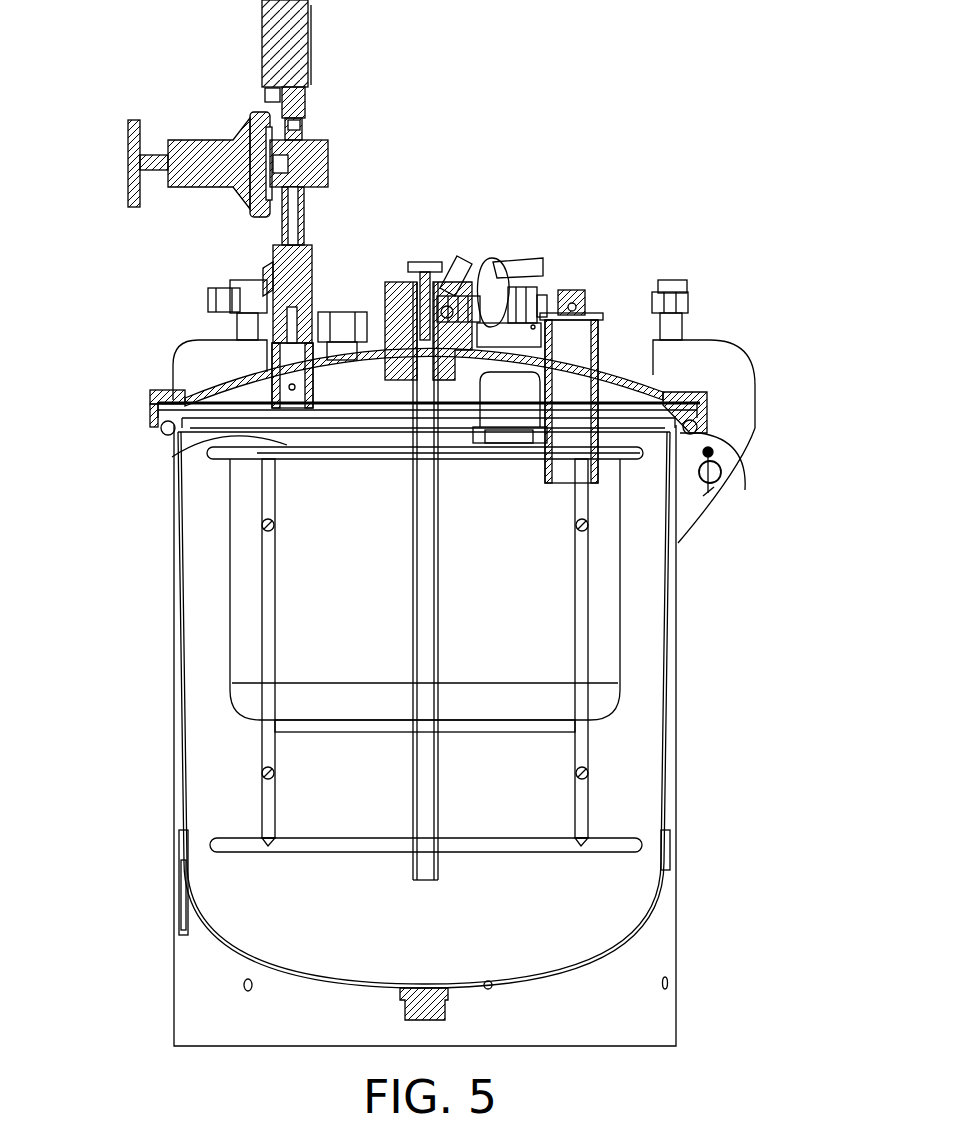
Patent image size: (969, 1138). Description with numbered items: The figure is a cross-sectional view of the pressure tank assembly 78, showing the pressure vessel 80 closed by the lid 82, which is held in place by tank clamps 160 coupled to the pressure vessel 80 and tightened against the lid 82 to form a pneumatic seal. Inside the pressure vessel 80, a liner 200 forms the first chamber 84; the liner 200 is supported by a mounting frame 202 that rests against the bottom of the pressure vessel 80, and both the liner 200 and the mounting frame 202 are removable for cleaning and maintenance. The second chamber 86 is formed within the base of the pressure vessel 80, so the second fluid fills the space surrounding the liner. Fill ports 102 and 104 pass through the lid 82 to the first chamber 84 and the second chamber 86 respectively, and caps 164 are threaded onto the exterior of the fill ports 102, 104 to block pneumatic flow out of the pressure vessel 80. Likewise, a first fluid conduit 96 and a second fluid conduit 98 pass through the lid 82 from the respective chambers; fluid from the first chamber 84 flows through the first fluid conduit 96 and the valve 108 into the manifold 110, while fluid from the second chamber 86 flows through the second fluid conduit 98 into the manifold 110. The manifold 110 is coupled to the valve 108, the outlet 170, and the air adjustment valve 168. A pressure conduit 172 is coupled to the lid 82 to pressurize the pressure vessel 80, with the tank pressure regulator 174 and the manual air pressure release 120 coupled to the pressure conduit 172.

The pressure tank assembly 78 is at (88, 1003).
The pressure vessel 80 is at (653, 1047).
The lid 82 is at (700, 407).
The first chamber 84 is at (183, 447).
The second chamber 86 is at (647, 800).
The first fluid conduit 96 is at (352, 310).
The second fluid conduit 98 is at (413, 880).
The fill port 102 is at (473, 423).
The fill port 104 is at (603, 360).
The valve 108 is at (507, 260).
The manifold 110 is at (390, 297).
The air pressure release 120 is at (270, 273).
The tank clamps 160 is at (182, 357).
The caps 164 is at (540, 315).
The air adjustment valve 168 is at (413, 262).
The outlet 170 is at (463, 262).
The pressure conduit 172 is at (309, 246).
The tank pressure regulator 174 is at (312, 48).
The liner 200 is at (612, 705).
The mounting frame 202 is at (263, 763).